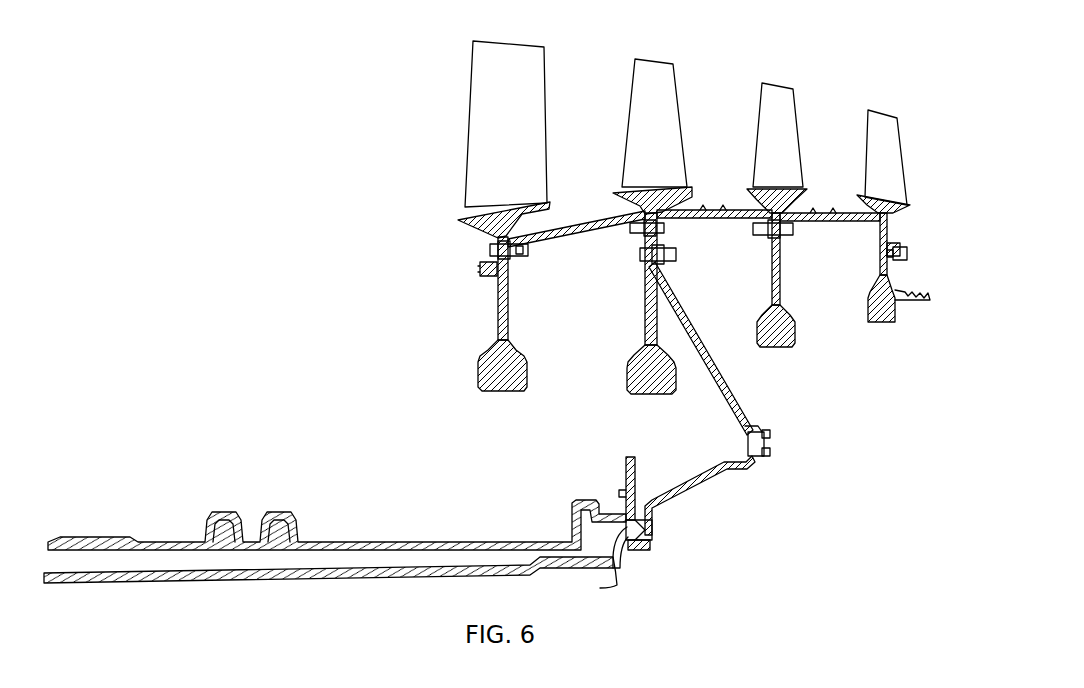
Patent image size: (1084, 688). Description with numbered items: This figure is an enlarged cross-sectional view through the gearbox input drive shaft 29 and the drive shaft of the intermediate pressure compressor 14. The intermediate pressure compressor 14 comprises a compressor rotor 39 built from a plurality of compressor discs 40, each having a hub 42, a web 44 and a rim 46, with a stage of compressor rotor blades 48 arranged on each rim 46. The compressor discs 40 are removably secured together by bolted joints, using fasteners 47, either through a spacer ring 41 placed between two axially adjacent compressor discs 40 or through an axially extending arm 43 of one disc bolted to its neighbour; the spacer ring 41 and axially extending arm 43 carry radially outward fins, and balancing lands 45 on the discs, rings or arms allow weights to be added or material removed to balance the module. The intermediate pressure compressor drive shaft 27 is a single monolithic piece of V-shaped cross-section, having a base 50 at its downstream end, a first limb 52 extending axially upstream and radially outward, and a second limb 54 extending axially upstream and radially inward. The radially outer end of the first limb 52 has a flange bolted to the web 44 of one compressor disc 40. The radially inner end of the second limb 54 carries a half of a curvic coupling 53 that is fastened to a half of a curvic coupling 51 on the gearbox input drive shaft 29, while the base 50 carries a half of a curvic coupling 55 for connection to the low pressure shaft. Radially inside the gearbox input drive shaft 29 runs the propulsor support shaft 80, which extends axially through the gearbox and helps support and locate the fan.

The intermediate pressure compressor 14 is at (428, 92).
The intermediate pressure compressor drive shaft 27 is at (723, 348).
The gearbox input drive shaft 29 is at (412, 541).
The compressor rotor 39 is at (539, 392).
The compressor disc 40 is at (673, 303).
The spacer ring 41 is at (590, 220).
The hub 42 is at (490, 380).
The axially extending arm 43 is at (712, 220).
The web 44 is at (510, 292).
The balancing land 45 is at (485, 275).
The rim 46 is at (470, 212).
The fastener 47 is at (488, 252).
The compressor rotor blades 48 is at (510, 68).
The base 50 is at (735, 494).
The half of a curvic coupling 51 is at (605, 585).
The first limb 52 is at (693, 315).
The half of a curvic coupling 53 is at (662, 528).
The second limb 54 is at (704, 480).
The half of a curvic coupling 55 is at (770, 436).
The propulsor support shaft 80 is at (406, 571).